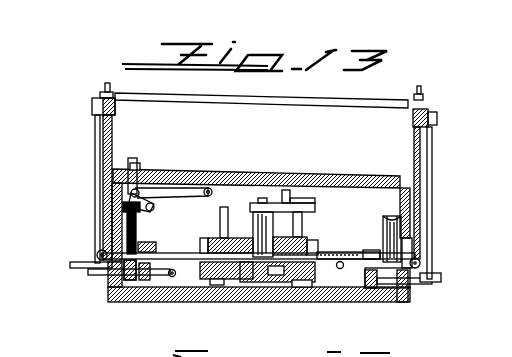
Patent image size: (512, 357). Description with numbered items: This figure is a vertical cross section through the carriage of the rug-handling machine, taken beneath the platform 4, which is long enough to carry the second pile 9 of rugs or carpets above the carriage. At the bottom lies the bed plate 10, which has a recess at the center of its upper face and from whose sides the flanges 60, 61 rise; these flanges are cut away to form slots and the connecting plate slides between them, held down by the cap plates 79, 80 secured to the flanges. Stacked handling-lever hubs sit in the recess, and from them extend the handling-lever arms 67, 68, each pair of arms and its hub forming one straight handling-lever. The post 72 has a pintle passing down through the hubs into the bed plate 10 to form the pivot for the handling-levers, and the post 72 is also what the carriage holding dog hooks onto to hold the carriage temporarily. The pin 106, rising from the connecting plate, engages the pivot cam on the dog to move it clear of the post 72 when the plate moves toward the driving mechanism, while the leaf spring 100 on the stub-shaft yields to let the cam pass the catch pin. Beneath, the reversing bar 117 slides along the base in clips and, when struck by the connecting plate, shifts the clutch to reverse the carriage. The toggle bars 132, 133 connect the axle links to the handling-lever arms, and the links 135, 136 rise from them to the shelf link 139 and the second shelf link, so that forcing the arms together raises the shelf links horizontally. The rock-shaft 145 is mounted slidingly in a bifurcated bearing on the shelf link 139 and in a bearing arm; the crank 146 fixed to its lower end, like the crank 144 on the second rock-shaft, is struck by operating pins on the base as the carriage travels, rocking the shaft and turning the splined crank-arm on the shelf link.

The platform 4 is at (289, 176).
The second pile 9 is at (255, 105).
The bed plate 10 is at (233, 278).
The flange 60 is at (200, 240).
The flange 61 is at (318, 246).
The handling-lever arm 67 is at (157, 257).
The handling-lever arm 68 is at (353, 266).
The post 72 is at (271, 229).
The cap plate 79 is at (205, 238).
The cap plate 80 is at (310, 240).
The leaf spring 100 is at (308, 223).
The pin 106 is at (223, 207).
The reversing bar 117 is at (288, 288).
The toggle bar 132 is at (100, 213).
The toggle bar 133 is at (438, 218).
The link 135 is at (421, 153).
The link 136 is at (107, 137).
The shelf link 139 is at (438, 118).
The crank 144 is at (70, 263).
The rock-shaft 145 is at (430, 185).
The crank 146 is at (97, 167).